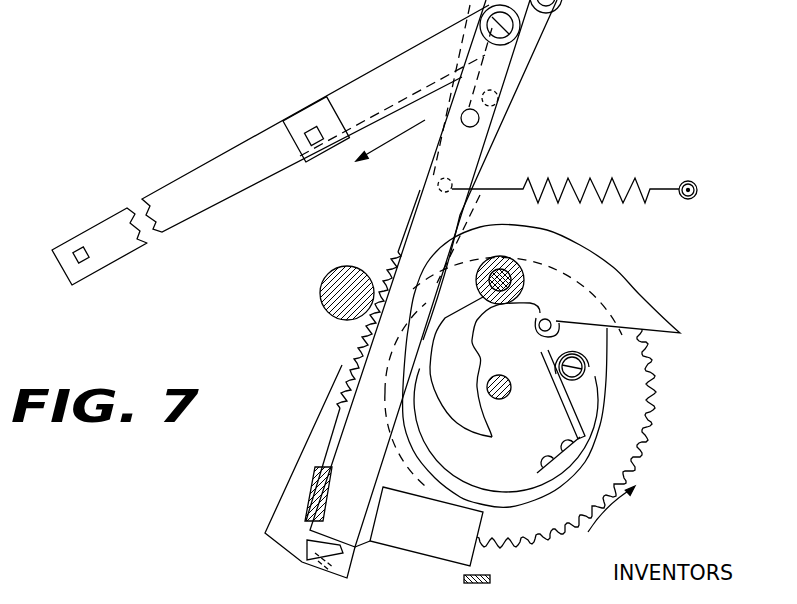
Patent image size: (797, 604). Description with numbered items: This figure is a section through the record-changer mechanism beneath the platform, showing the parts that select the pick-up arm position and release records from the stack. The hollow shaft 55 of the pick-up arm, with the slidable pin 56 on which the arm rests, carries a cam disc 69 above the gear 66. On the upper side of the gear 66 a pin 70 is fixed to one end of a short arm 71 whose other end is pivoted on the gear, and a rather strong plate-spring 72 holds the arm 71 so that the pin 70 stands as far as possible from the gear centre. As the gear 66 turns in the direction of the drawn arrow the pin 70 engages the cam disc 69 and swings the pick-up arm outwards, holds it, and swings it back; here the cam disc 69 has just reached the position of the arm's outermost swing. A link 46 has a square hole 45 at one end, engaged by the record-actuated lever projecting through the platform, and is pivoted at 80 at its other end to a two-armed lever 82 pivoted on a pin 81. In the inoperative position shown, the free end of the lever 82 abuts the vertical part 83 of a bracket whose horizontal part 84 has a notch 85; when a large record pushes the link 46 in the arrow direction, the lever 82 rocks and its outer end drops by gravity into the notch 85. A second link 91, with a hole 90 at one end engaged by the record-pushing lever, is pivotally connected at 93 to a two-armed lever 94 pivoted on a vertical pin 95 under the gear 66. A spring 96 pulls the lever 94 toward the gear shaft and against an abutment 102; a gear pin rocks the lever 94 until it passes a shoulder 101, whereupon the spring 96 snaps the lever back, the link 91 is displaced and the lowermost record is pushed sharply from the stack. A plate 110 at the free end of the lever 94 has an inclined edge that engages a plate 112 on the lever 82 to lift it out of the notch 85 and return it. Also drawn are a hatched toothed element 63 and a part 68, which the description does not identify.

The square hole 45 is at (307, 133).
The link 46 is at (357, 102).
The hollow shaft 55 is at (517, 257).
The pin 56 is at (523, 272).
The pinion 63 is at (327, 272).
The gear 66 is at (653, 413).
The frame 68 is at (686, 11).
The cam disc 69 is at (660, 308).
The pin 70 is at (551, 320).
The short arm 71 is at (580, 343).
The plate-spring 72 is at (572, 422).
The pivot 80 is at (488, 25).
The pin 81 is at (467, 120).
The two-armed lever 82 is at (430, 215).
The vertical part of bracket 83 is at (307, 497).
The horizontal part of bracket 84 is at (427, 548).
The notch 85 is at (383, 523).
The hole 90 is at (88, 262).
The link 91 is at (197, 182).
The pivotal connection 93 is at (560, 0).
The two-armed lever 94 is at (532, 67).
The vertical pin 95 is at (500, 103).
The spring 96 is at (573, 187).
The shoulder 101 is at (337, 373).
The abutment 102 is at (492, 578).
The plate 110 is at (265, 533).
The plate 112 is at (335, 575).